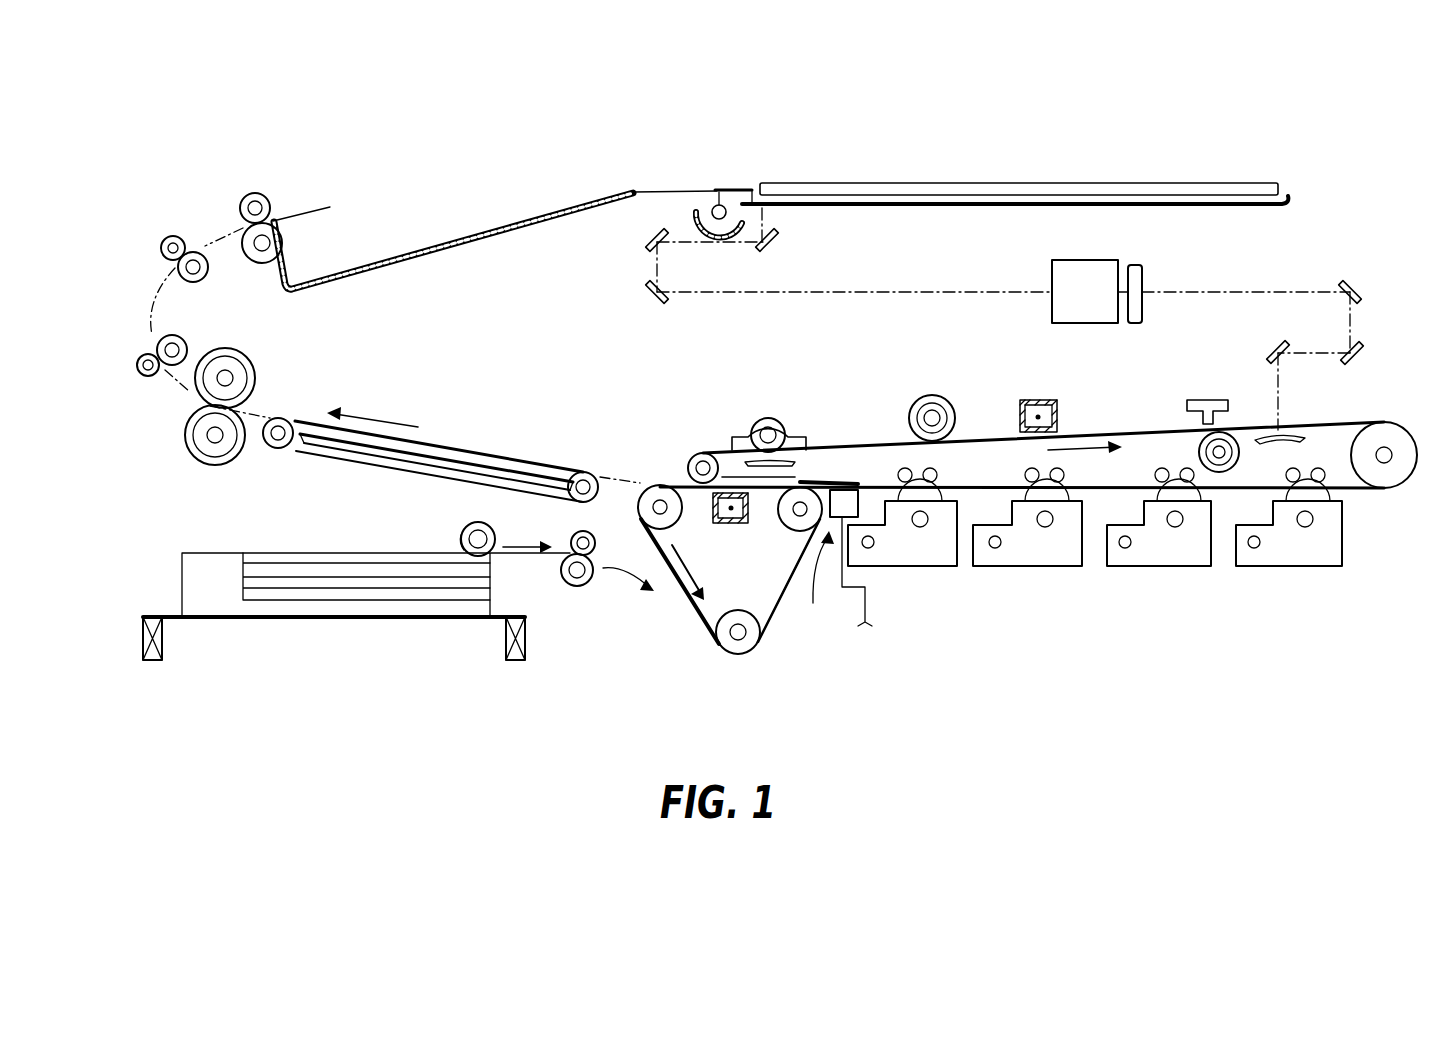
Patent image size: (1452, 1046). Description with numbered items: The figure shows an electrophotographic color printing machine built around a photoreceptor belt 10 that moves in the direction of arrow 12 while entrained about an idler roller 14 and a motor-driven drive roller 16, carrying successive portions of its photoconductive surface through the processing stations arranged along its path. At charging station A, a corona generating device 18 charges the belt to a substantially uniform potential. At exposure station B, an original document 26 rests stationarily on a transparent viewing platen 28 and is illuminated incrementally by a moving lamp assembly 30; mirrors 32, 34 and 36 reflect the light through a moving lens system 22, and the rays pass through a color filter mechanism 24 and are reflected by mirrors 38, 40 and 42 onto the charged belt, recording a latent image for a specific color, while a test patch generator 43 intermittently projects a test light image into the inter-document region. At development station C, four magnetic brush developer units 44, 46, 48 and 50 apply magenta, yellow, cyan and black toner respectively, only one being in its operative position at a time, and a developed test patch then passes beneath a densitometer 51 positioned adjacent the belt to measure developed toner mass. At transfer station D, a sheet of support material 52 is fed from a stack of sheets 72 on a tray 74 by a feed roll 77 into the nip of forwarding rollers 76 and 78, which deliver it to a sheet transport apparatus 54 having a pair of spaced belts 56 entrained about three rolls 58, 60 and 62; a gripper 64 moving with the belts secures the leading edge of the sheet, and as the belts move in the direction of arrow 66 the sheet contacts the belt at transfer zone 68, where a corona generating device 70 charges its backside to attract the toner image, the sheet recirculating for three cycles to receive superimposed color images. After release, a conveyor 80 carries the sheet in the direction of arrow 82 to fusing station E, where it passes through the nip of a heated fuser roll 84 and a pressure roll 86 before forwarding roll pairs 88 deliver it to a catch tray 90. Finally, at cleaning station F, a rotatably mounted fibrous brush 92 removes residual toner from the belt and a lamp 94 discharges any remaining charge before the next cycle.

The photoreceptor belt 10 is at (867, 400).
The arrow 12 is at (1090, 447).
The idler roller 14 is at (688, 470).
The drive roller 16 is at (1397, 470).
The corona generating device 18 is at (1006, 380).
The moving lens system 22 is at (1052, 268).
The color filter mechanism 24 is at (1142, 280).
The original document 26 is at (1212, 183).
The transparent viewing platen 28 is at (1293, 205).
The moving lamp assembly 30 is at (719, 205).
The mirror 32 is at (770, 245).
The mirror 34 is at (648, 248).
The mirror 36 is at (653, 302).
The mirror 38 is at (1343, 280).
The mirror 40 is at (1367, 353).
The mirror 42 is at (1275, 350).
The test patch generator 43 is at (1190, 385).
The developer unit 44 is at (1275, 585).
The developer unit 46 is at (1183, 585).
The developer unit 48 is at (1050, 585).
The developer unit 50 is at (922, 585).
The densitometer 51 is at (836, 572).
The sheet of support material 52 is at (625, 562).
The sheet transport apparatus 54 is at (790, 640).
The belts 56 is at (793, 577).
The roll 58 is at (752, 645).
The roll 60 is at (816, 490).
The roll 62 is at (660, 483).
The gripper 64 is at (703, 623).
The arrow 66 is at (678, 587).
The transfer zone 68 is at (730, 447).
The corona generating device 70 is at (723, 525).
The stack of sheets 72 is at (293, 555).
The tray 74 is at (370, 622).
The forwarding roller 76 is at (578, 535).
The feed roll 77 is at (458, 533).
The forwarding roller 78 is at (570, 583).
The conveyor 80 is at (452, 445).
The arrow 82 is at (367, 418).
The heated fuser roll 84 is at (243, 357).
The pressure roll 86 is at (202, 458).
The forwarding roll pairs 88 is at (272, 220).
The catch tray 90 is at (500, 229).
The fibrous brush 92 is at (768, 430).
The lamp 94 is at (927, 398).
The charging station A is at (1037, 376).
The exposure station B is at (1305, 410).
The development station C is at (1002, 670).
The transfer station D is at (713, 665).
The fusing station E is at (172, 415).
The cleaning station F is at (785, 388).